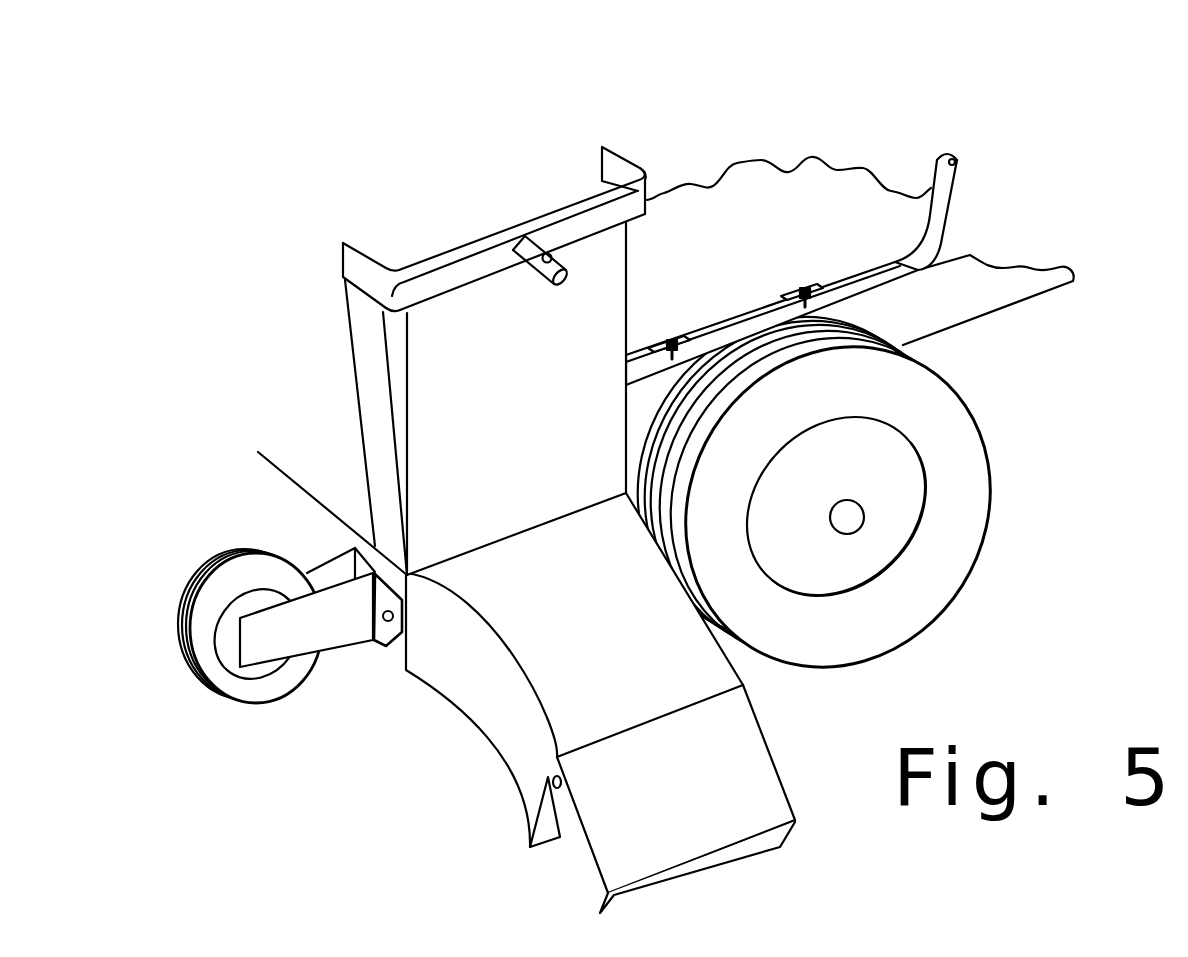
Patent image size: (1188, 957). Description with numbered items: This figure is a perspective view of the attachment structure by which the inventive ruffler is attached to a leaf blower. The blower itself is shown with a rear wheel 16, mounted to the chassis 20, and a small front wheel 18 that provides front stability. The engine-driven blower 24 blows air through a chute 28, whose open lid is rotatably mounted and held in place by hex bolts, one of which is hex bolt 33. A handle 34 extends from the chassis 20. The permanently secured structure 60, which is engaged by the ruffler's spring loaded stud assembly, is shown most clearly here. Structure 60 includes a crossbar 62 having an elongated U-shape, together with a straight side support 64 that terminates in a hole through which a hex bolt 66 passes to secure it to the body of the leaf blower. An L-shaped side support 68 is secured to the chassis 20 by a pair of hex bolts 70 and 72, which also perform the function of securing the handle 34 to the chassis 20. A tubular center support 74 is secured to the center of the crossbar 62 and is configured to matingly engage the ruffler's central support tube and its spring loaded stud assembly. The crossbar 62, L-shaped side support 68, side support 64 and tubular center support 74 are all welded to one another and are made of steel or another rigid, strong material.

The rear wheel 16 is at (925, 577).
The front wheel 18 is at (218, 566).
The chassis 20 is at (958, 303).
The blower 24 is at (442, 398).
The chute 28 is at (460, 663).
The hex bolt 33 is at (548, 778).
The handle 34 is at (943, 191).
The permanently secured structure 60 is at (567, 200).
The crossbar 62 is at (450, 292).
The straight side support 64 is at (372, 374).
The hex bolt 66 is at (372, 642).
The L-shaped side support 68 is at (743, 313).
The hex bolt 70 is at (682, 342).
The hex bolt 72 is at (820, 287).
The tubular center support 74 is at (513, 246).